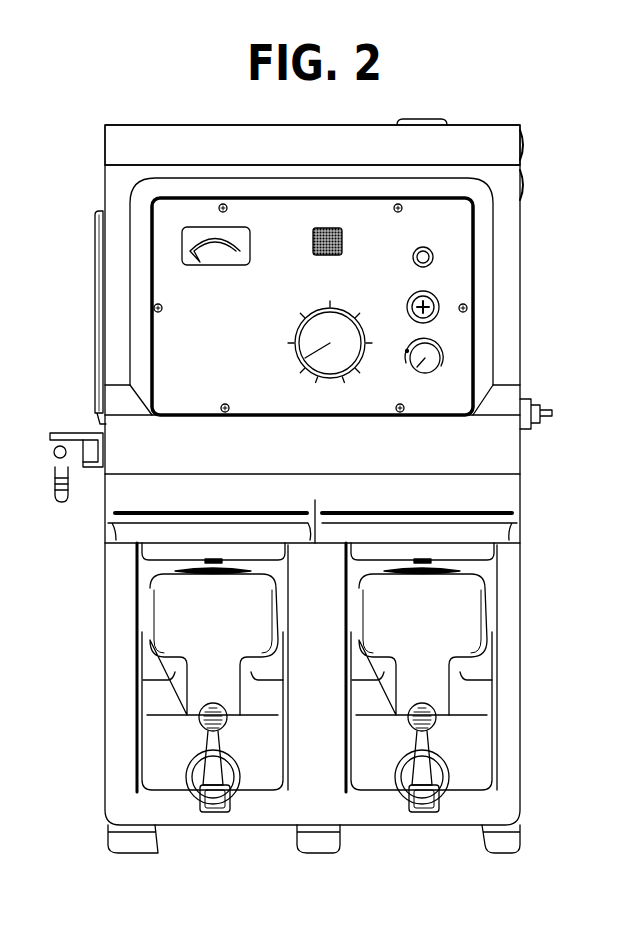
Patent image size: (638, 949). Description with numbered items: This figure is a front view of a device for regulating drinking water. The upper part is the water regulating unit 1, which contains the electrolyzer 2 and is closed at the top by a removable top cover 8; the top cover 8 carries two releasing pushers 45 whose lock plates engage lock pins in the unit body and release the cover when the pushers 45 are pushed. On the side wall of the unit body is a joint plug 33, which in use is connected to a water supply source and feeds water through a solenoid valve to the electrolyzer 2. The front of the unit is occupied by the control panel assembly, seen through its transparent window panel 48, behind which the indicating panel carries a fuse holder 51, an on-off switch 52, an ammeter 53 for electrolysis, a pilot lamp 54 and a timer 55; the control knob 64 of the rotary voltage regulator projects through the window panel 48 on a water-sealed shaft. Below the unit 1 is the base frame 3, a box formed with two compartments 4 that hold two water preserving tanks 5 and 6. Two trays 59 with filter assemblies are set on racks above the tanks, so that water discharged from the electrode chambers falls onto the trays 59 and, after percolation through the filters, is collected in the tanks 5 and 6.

The water regulating unit 1 is at (522, 292).
The electrolyzer 2 is at (102, 290).
The base frame 3 is at (522, 598).
The compartments 4 is at (288, 750).
The water preserving tank 5 is at (272, 690).
The water preserving tank 6 is at (367, 638).
The top cover 8 is at (213, 134).
The joint plug 33 is at (56, 485).
The releasing pushers 45 is at (522, 147).
The transparent window panel 48 is at (455, 259).
The fuse holder 51 is at (411, 304).
The on-off switch 52 is at (424, 249).
The ammeter 53 is at (226, 260).
The pilot lamp 54 is at (313, 250).
The timer 55 is at (331, 367).
The trays 59 is at (338, 530).
The control knob 64 is at (425, 366).